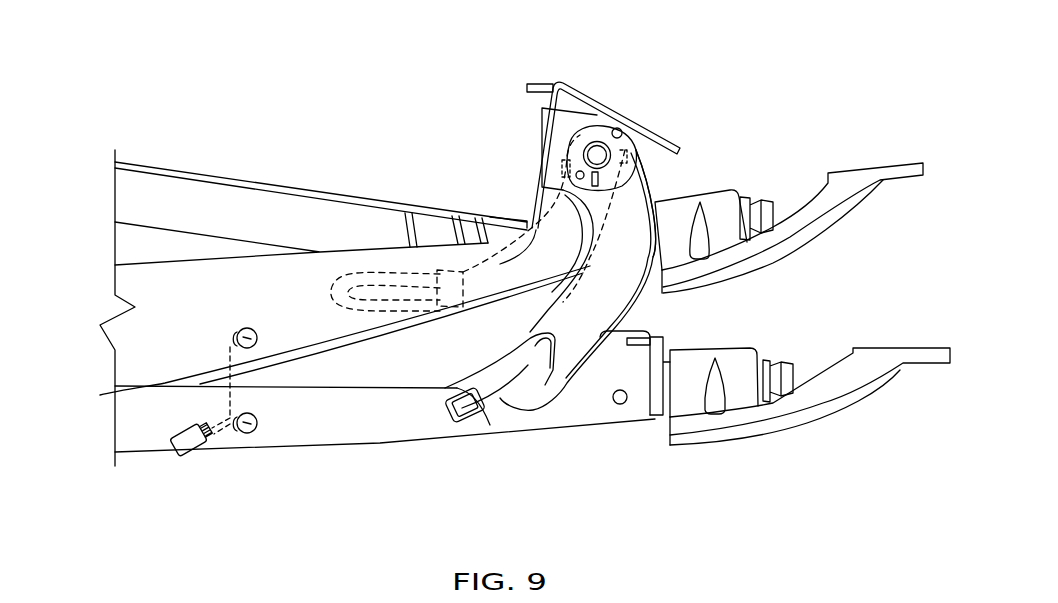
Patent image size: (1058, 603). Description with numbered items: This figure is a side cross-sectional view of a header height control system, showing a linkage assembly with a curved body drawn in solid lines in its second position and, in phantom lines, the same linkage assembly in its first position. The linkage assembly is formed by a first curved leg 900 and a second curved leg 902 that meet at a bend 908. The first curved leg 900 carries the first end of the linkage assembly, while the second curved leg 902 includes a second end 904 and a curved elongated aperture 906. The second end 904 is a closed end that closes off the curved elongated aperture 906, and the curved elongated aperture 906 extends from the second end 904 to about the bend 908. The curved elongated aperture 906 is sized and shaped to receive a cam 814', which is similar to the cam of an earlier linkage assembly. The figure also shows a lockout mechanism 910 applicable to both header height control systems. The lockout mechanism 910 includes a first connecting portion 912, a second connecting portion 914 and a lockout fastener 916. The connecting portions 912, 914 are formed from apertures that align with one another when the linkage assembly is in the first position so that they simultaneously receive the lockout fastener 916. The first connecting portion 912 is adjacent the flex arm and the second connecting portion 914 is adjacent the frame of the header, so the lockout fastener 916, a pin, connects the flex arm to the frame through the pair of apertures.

The cam 814' is at (488, 456).
The first curved leg 900 is at (655, 192).
The second curved leg 902 is at (549, 403).
The second end 904 is at (441, 422).
The curved elongated aperture 906 is at (503, 401).
The bend 908 is at (520, 341).
The lockout mechanism 910 is at (197, 381).
The first connecting portion 912 is at (248, 432).
The second connecting portion 914 is at (252, 328).
The lockout fastener 916 is at (185, 441).